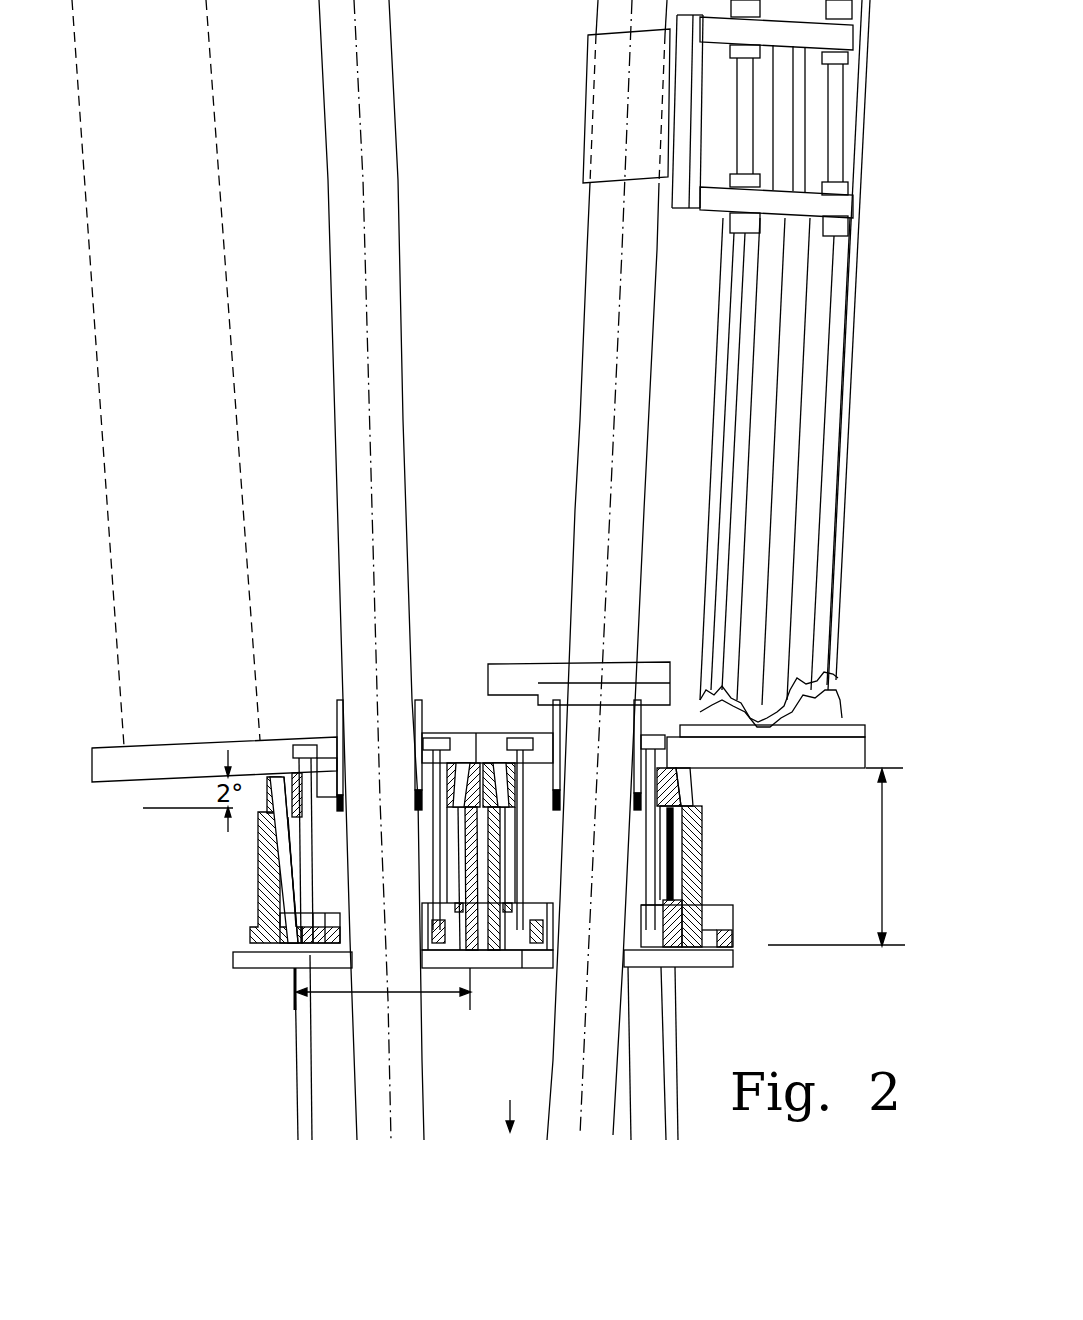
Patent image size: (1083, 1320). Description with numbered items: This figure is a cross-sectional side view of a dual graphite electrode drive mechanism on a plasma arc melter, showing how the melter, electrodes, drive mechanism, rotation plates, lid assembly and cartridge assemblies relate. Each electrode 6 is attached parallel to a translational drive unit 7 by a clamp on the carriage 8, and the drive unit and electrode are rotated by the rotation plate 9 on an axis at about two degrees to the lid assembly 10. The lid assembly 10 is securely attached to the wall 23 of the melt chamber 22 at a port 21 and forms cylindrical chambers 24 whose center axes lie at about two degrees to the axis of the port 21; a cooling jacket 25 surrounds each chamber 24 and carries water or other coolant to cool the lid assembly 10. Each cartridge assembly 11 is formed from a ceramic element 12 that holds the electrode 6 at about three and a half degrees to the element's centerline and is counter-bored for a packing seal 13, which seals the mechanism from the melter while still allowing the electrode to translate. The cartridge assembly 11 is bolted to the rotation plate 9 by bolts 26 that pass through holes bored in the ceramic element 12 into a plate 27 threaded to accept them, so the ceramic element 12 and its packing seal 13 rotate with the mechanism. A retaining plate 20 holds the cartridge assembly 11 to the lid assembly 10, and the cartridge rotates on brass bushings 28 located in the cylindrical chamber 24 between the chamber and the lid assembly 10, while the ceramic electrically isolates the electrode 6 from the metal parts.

The electrode 6 is at (404, 386).
The translational drive unit 7 is at (853, 486).
The carriage 8 is at (585, 97).
The rotation plate 9 is at (158, 748).
The lid assembly 10 is at (882, 842).
The cartridge assembly 11 is at (397, 993).
The ceramic element 12 is at (327, 878).
The packing seal 13 is at (337, 813).
The retaining plate 20 is at (690, 782).
The port 21 is at (552, 967).
The melt chamber 22 is at (510, 1101).
The wall 23 is at (650, 967).
The cylindrical chamber 24 is at (697, 858).
The cooling jacket 25 is at (688, 900).
The bolts 26 is at (302, 744).
The plate 27 is at (343, 962).
The bushings 28 is at (268, 806).